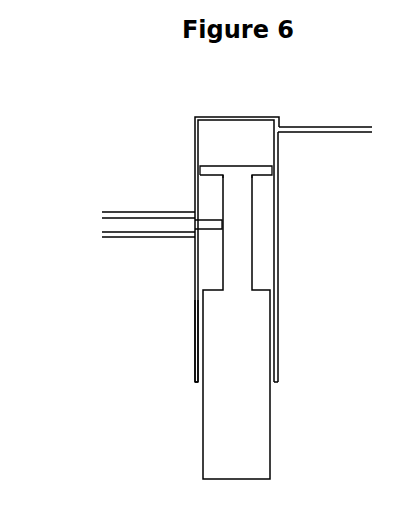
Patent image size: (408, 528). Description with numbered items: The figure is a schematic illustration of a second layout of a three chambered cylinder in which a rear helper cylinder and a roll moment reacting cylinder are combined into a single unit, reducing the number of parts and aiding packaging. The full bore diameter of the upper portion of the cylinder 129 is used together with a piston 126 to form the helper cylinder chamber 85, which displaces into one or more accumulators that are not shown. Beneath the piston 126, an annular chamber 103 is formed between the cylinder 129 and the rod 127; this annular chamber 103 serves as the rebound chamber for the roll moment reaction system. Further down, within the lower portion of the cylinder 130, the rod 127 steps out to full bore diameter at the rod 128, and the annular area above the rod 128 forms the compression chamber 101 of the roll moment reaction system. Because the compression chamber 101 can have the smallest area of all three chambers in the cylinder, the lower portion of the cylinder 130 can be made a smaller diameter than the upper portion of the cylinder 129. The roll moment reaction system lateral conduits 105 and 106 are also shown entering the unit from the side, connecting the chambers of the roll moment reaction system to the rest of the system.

The helper cylinder chamber 85 is at (225, 138).
The upper portion of the cylinder 129 is at (197, 149).
The piston 126 is at (262, 174).
The annular chamber 103 is at (262, 202).
The lateral conduit 106 is at (163, 215).
The lateral conduit 105 is at (163, 235).
The rod 127 is at (242, 247).
The compression chamber 101 is at (263, 282).
The lower portion of the cylinder 130 is at (196, 338).
The rod 128 is at (252, 367).